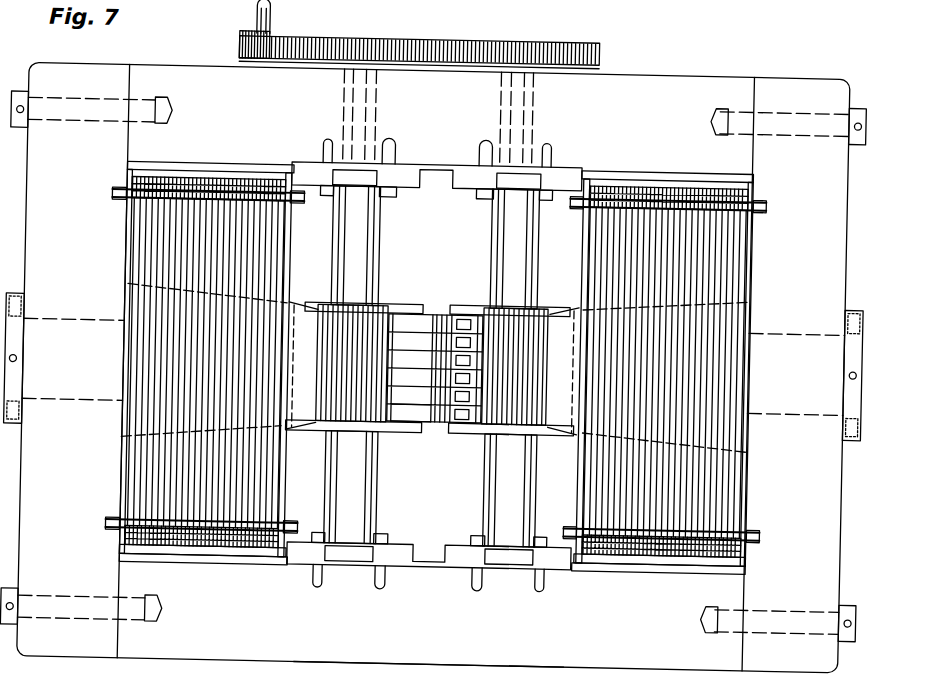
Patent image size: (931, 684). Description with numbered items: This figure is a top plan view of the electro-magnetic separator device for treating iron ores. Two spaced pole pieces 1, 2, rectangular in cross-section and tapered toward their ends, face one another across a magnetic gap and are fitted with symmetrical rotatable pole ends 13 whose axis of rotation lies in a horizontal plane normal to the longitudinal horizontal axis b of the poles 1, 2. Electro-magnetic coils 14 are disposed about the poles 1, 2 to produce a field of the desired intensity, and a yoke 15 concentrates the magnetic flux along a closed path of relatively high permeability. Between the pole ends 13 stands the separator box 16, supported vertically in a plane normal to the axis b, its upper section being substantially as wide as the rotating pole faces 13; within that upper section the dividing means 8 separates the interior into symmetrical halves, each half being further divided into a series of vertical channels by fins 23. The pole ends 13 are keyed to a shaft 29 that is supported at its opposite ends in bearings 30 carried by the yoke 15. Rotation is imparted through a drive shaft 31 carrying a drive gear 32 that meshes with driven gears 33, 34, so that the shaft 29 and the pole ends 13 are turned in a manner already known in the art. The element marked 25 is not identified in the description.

The pole piece 1 is at (341, 363).
The pole piece 2 is at (527, 367).
The dividing means 8 is at (410, 325).
The rotatable pole end 13 is at (348, 312).
The electro-magnetic coil 14 is at (212, 556).
The yoke 15 is at (433, 367).
The separator box 16 is at (482, 310).
The fin 23 is at (424, 398).
The frame bottom member 25 is at (415, 664).
The shaft 29 is at (501, 483).
The bearing 30 is at (417, 190).
The drive shaft 31 is at (250, 27).
The drive gear 32 is at (233, 52).
The driven gear 33 is at (296, 71).
The driven gear 34 is at (490, 70).
The longitudinal horizontal axis b is at (434, 367).